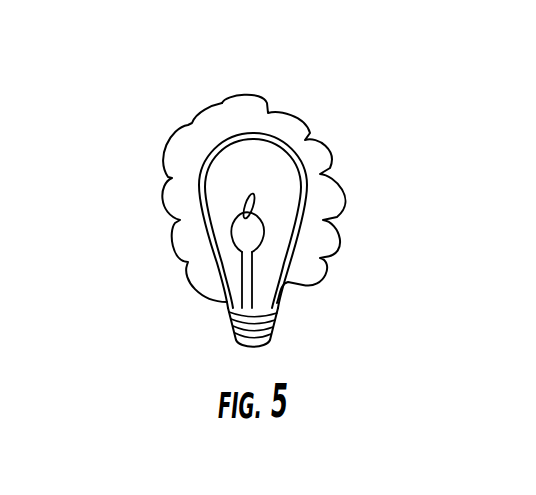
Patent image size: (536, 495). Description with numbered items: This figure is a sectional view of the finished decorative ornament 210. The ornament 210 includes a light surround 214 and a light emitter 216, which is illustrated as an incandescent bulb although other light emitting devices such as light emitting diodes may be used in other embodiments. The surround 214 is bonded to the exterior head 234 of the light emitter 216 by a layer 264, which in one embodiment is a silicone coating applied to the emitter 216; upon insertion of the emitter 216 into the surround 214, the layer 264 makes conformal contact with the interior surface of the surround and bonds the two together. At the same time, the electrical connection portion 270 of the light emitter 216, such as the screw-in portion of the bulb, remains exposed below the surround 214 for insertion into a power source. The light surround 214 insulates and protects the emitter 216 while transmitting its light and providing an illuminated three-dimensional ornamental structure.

The ornament 210 is at (241, 182).
The light surround 214 is at (322, 160).
The light emitter 216 is at (298, 202).
The exterior head 234 is at (205, 190).
The layer 264 is at (280, 147).
The electrical connection portion 270 is at (277, 313).